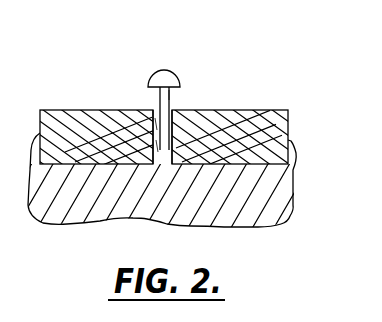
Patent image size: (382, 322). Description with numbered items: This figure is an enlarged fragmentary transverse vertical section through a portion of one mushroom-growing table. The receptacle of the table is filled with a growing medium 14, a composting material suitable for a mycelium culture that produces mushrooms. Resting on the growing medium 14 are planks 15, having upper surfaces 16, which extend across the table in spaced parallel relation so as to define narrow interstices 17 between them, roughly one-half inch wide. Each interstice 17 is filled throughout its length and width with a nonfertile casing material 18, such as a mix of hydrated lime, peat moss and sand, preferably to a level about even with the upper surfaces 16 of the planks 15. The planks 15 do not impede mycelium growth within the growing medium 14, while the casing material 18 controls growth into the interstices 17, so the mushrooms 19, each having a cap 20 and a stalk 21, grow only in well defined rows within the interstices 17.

The growing medium 14 is at (72, 211).
The planks 15 is at (83, 123).
The upper surfaces 16 is at (121, 110).
The interstices 17 is at (157, 148).
The nonfertile casing material 18 is at (167, 152).
The mushrooms 19 is at (165, 77).
The cap 20 is at (152, 73).
The stalk 21 is at (170, 97).